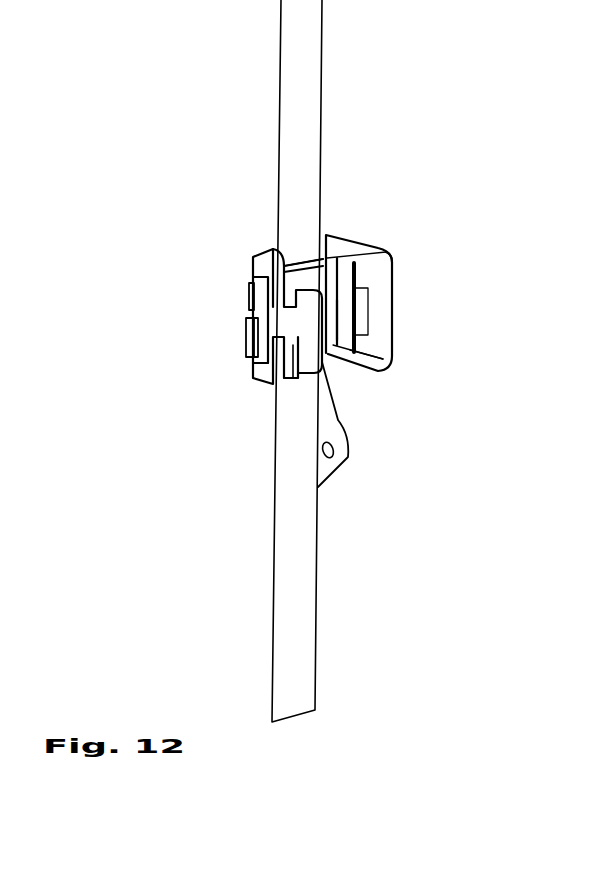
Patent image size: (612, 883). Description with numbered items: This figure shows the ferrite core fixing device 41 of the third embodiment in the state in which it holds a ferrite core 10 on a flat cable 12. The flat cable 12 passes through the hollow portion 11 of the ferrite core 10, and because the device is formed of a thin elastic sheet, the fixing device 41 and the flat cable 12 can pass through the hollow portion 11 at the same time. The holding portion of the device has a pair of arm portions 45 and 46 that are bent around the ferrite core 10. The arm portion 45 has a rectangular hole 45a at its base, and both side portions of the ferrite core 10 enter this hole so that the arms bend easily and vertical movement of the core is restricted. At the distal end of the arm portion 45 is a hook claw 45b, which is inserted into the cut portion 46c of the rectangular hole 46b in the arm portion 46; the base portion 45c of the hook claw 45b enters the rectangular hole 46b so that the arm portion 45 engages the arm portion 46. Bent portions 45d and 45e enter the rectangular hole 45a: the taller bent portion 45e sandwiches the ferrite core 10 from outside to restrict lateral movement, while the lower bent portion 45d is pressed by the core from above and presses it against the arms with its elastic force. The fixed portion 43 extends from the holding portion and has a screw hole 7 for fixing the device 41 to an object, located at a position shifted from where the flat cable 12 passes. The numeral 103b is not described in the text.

The flat cable 12 is at (308, 33).
The ferrite core fixing device 41 is at (233, 243).
The arm portion 45 is at (258, 268).
The rectangular hole 45a is at (260, 333).
The hook claw 45b is at (320, 352).
The base portion 45c is at (275, 384).
The bent portion 45d is at (250, 295).
The bent portion 45e is at (247, 333).
The hollow portion 11 is at (300, 270).
The arm portion 46 is at (363, 242).
The plate corner 103b is at (393, 266).
The rectangular hole 46b is at (367, 303).
The ferrite core 10 is at (332, 320).
The cut portion 46c is at (362, 345).
The fixed portion 43 is at (338, 420).
The screw hole 7 is at (333, 455).